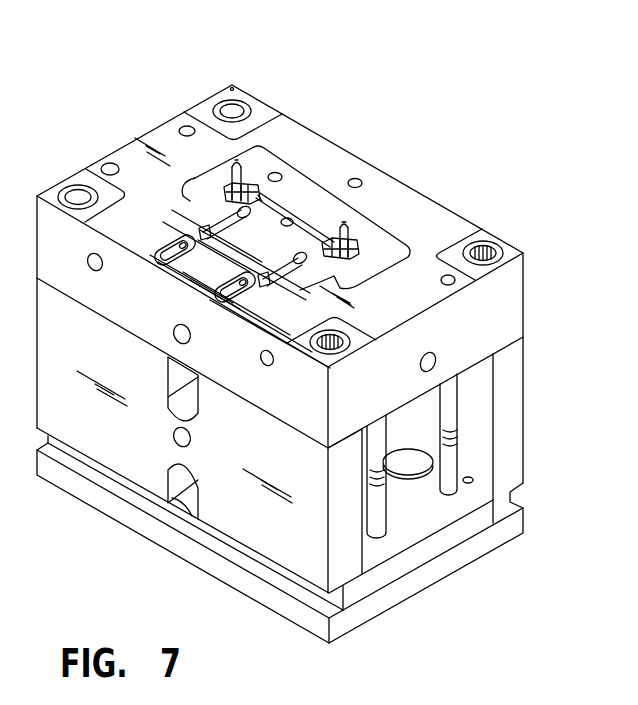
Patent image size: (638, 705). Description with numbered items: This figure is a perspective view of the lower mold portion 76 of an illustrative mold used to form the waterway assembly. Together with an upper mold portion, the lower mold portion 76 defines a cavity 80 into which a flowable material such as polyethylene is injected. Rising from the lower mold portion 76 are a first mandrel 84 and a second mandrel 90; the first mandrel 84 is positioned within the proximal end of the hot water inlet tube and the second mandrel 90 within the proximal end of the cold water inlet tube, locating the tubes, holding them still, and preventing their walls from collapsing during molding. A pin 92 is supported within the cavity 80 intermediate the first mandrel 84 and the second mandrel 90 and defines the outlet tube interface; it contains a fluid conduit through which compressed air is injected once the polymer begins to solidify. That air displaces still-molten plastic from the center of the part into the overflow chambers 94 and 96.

The lower mold portion 76 is at (495, 114).
The cavity 80 is at (305, 234).
The first mandrel 84 is at (229, 181).
The second mandrel 90 is at (364, 233).
The pin 92 is at (313, 229).
The overflow chamber 94 is at (245, 183).
The overflow chamber 96 is at (344, 233).